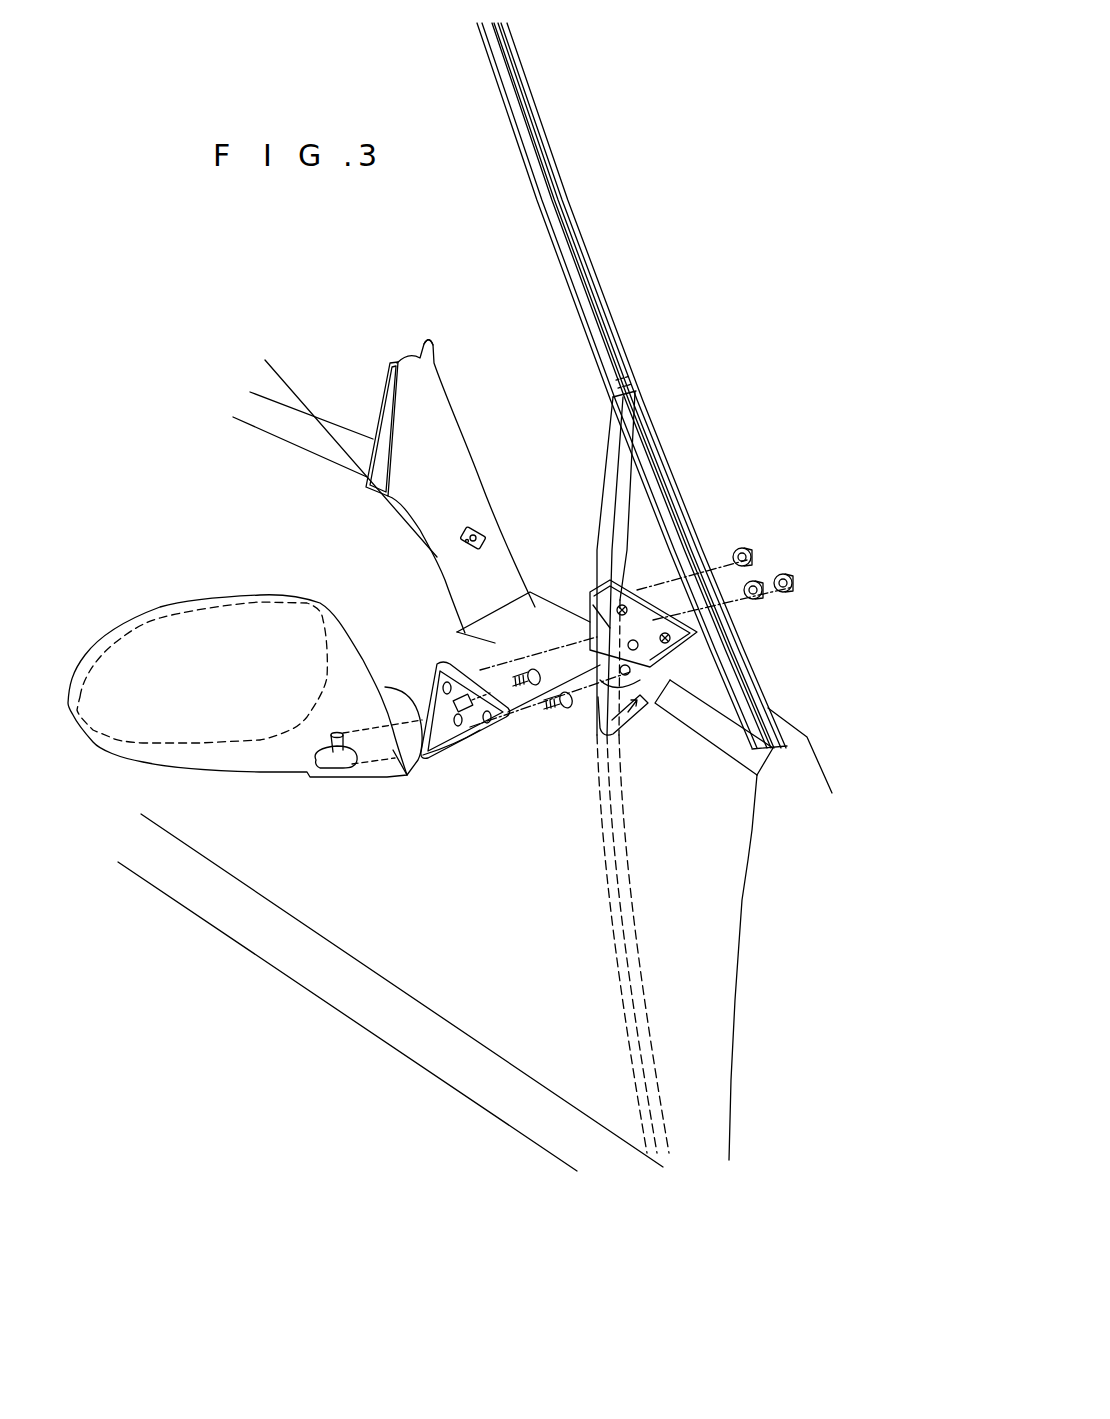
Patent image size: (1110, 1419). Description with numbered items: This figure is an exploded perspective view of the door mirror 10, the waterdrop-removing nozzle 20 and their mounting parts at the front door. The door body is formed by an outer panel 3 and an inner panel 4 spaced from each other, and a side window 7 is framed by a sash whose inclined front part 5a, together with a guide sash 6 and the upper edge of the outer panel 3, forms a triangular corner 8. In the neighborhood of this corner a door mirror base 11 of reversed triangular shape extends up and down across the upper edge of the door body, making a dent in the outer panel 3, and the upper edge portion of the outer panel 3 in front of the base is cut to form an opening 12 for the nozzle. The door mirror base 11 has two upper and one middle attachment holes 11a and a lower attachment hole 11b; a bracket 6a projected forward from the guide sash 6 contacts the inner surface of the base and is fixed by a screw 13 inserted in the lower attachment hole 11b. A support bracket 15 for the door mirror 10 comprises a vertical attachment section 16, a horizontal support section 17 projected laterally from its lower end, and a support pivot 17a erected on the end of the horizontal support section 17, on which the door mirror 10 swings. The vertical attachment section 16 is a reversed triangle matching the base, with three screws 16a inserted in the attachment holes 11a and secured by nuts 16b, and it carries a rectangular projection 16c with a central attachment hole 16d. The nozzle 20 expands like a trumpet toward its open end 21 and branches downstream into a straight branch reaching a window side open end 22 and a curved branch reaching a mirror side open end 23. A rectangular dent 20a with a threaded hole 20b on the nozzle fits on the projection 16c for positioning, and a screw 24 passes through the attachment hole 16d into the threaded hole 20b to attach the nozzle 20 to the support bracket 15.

The outer panel 3 is at (346, 905).
The inner panel 4 is at (827, 772).
The inclined front part of the sash 5a is at (586, 243).
The guide sash 6 is at (603, 477).
The bracket 6a is at (660, 672).
The side window 7 is at (487, 190).
The triangular corner 8 is at (648, 542).
The door mirror 10 is at (233, 597).
The door mirror base 11 is at (640, 610).
The attachment holes 11a is at (598, 626).
The lower attachment hole 11b is at (610, 690).
The opening for the nozzle 12 is at (599, 745).
The screw 13 is at (545, 708).
The support bracket 15 is at (494, 816).
The vertical attachment section 16 is at (490, 743).
The screws 16a is at (490, 682).
The nuts 16b is at (790, 574).
The rectangular projection 16c is at (432, 655).
The central attachment hole 16d is at (433, 697).
The horizontal support section 17 is at (405, 780).
The support pivot 17a is at (338, 770).
The nozzle 20 is at (470, 410).
The rectangular dent 20a is at (482, 525).
The threaded hole 20b is at (460, 538).
The open end 21 is at (495, 603).
The window side open end 22 is at (426, 343).
The mirror side open end 23 is at (380, 400).
The screw 24 is at (553, 662).